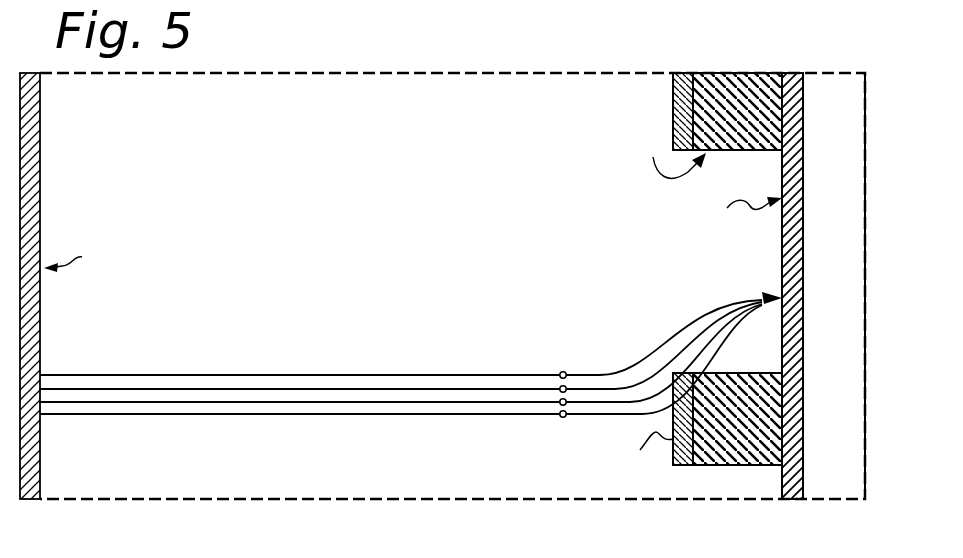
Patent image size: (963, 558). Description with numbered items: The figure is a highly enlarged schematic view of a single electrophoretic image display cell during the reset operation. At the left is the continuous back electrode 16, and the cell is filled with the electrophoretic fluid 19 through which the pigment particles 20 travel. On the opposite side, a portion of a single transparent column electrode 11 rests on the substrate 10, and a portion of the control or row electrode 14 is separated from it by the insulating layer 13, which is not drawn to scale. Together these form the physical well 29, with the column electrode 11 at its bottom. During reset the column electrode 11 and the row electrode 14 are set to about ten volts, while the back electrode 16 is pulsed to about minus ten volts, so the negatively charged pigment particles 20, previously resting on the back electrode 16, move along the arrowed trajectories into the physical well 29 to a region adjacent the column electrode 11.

The substrate 10 is at (825, 80).
The column electrode 11 is at (803, 252).
The insulating layer 13 is at (735, 85).
The control or row electrode 14 is at (680, 96).
The back electrode 16 is at (40, 145).
The electrophoretic fluid 19 is at (363, 47).
The pigment particles 20 is at (560, 372).
The physical well 29 is at (737, 275).